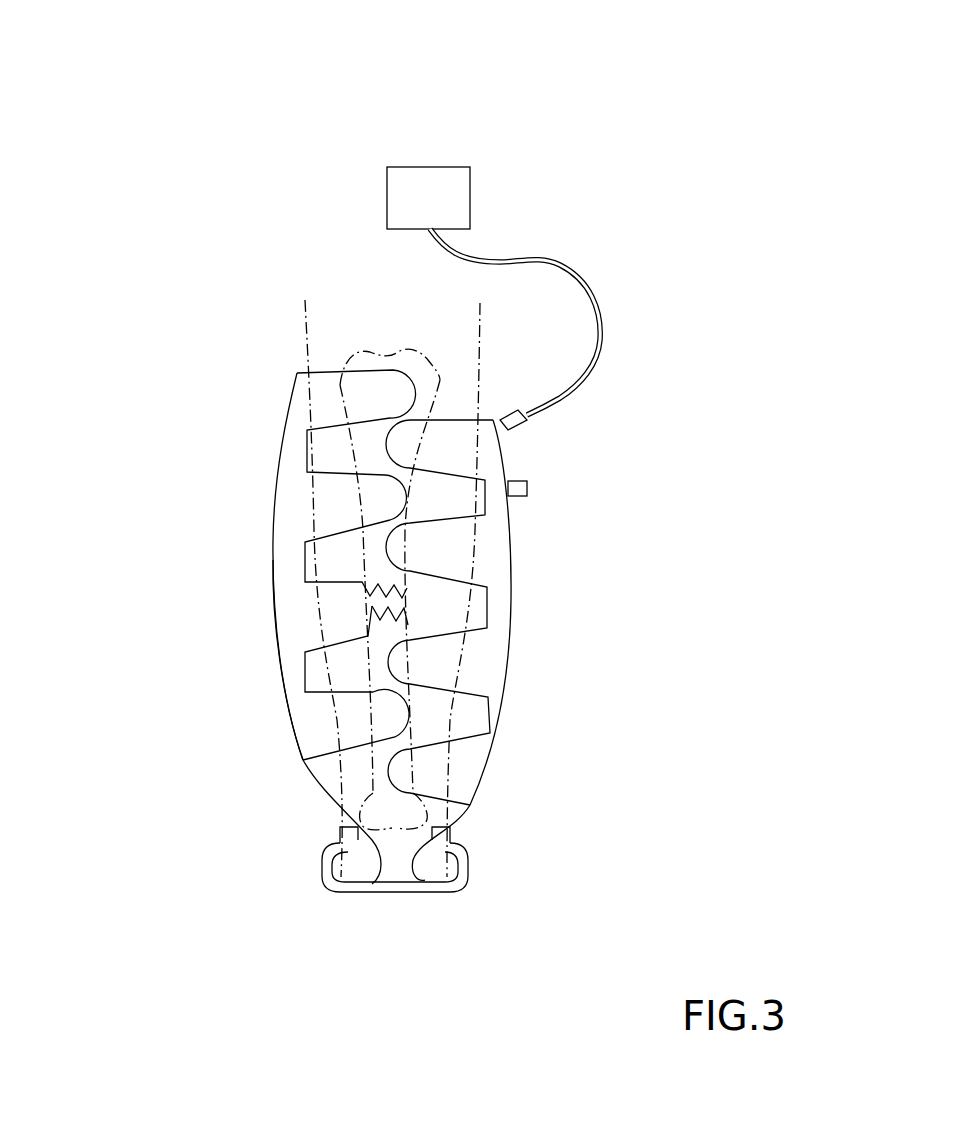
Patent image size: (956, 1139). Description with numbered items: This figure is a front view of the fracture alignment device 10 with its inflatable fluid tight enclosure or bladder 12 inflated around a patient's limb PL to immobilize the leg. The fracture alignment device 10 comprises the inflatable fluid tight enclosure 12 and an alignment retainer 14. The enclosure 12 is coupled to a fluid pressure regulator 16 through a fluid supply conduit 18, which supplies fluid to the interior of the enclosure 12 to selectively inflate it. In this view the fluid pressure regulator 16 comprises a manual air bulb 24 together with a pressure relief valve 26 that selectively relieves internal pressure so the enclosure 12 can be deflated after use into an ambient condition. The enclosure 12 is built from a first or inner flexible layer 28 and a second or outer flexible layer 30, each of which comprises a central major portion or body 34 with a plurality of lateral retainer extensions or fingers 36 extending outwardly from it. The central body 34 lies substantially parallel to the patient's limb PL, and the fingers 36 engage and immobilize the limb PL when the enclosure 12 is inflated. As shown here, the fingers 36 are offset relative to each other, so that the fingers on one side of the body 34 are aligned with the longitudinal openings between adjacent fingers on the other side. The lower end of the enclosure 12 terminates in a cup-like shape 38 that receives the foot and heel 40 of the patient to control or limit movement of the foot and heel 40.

The fracture alignment device 10 is at (173, 496).
The inflatable fluid tight enclosure 12 is at (240, 428).
The alignment retainer 14 is at (513, 540).
The fluid pressure regulator 16 is at (435, 146).
The fluid supply conduit 18 is at (597, 303).
The manual air bulb 24 is at (387, 182).
The pressure relief valve 26 is at (527, 488).
The first or inner flexible layer 28 is at (327, 393).
The second or outer flexible layer 30 is at (283, 422).
The central major portion or body 34 is at (300, 727).
The lateral retainer extensions or fingers 36 is at (413, 387).
The cup-like shape 38 is at (330, 888).
The foot and heel 40 is at (340, 833).
The patient's limb PL is at (377, 500).